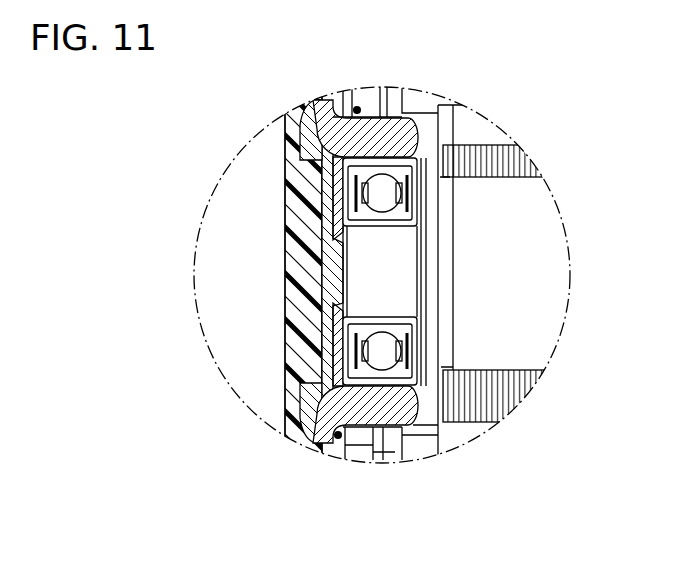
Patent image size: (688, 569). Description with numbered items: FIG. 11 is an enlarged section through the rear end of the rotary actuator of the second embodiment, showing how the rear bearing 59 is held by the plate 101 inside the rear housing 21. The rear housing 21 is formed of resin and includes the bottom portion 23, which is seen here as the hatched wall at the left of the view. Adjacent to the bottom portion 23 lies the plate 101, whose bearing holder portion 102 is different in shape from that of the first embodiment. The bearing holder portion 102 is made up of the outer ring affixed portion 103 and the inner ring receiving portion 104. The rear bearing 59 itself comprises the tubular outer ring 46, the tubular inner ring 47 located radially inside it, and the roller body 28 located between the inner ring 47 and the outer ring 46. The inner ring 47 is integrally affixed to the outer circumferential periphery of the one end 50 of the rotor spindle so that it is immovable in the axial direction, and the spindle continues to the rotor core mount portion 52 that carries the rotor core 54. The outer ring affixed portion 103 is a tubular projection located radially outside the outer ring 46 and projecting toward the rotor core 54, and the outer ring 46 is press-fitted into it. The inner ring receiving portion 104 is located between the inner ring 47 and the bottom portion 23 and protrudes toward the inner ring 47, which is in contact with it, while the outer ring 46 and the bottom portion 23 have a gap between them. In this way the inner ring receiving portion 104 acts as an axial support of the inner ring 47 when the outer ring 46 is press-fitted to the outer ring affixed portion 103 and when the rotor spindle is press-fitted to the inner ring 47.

The rear housing 21 is at (383, 303).
The bottom portion 23 is at (293, 362).
The roller body 28 is at (372, 192).
The outer ring 46 is at (333, 163).
The inner ring 47 is at (363, 219).
The one end 50 is at (407, 242).
The rotor core mount portion 52 is at (547, 250).
The rotor core 54 is at (503, 402).
The rear bearing 59 is at (279, 271).
The plate 101 is at (323, 282).
The bearing holder portion 102 is at (331, 455).
The outer ring affixed portion 103 is at (362, 417).
The inner ring receiving portion 104 is at (307, 437).